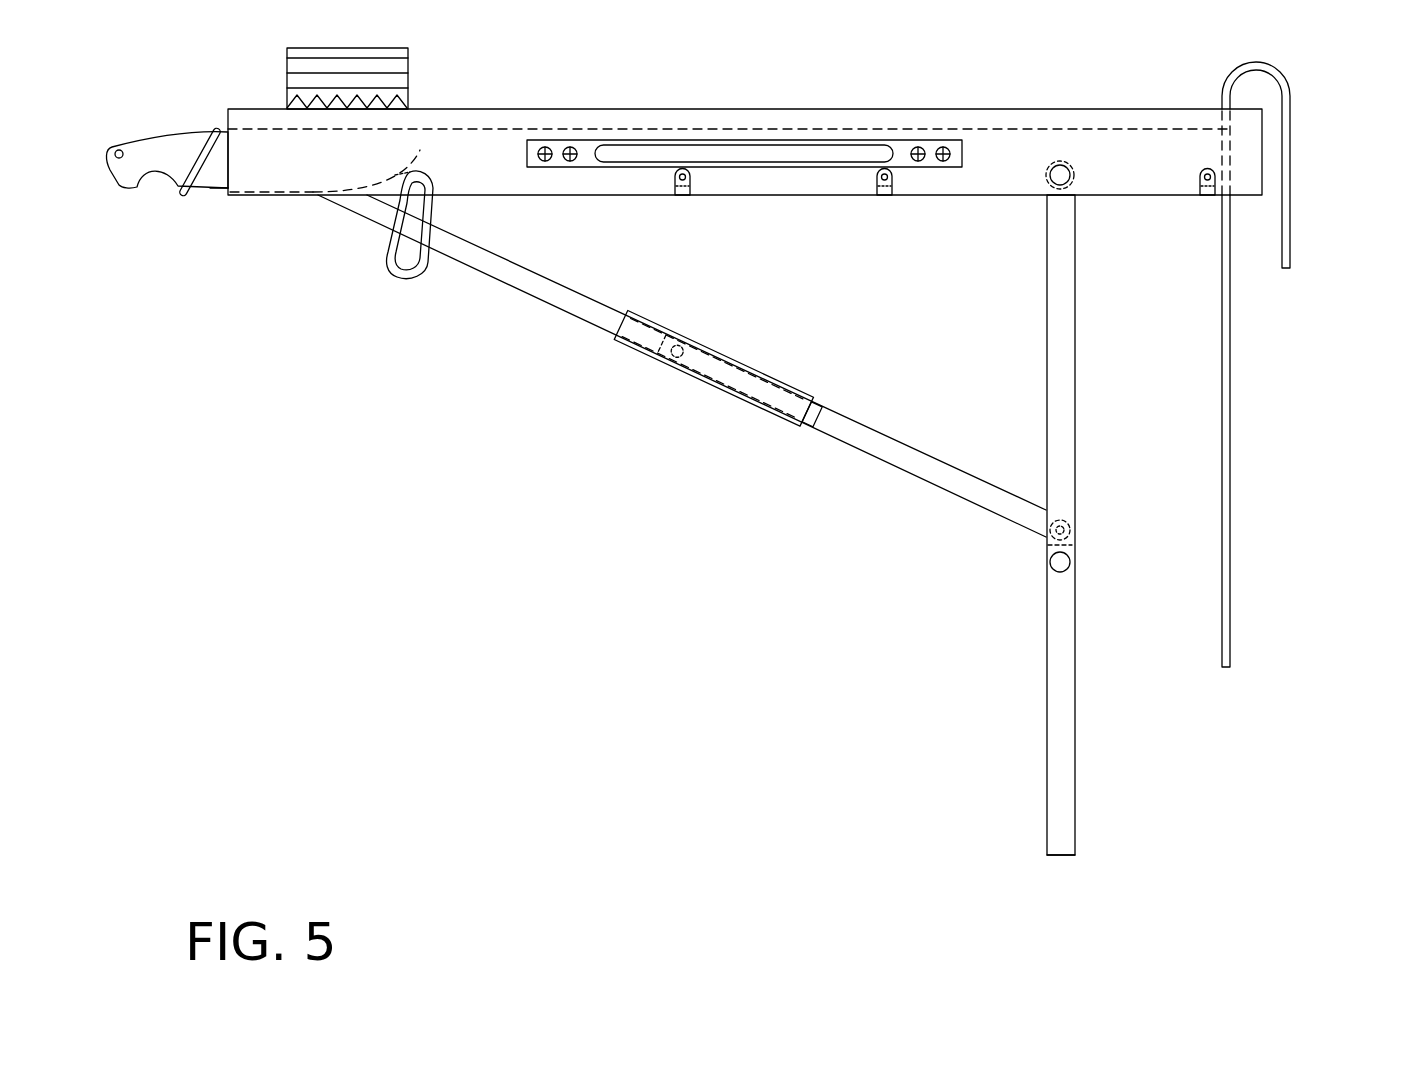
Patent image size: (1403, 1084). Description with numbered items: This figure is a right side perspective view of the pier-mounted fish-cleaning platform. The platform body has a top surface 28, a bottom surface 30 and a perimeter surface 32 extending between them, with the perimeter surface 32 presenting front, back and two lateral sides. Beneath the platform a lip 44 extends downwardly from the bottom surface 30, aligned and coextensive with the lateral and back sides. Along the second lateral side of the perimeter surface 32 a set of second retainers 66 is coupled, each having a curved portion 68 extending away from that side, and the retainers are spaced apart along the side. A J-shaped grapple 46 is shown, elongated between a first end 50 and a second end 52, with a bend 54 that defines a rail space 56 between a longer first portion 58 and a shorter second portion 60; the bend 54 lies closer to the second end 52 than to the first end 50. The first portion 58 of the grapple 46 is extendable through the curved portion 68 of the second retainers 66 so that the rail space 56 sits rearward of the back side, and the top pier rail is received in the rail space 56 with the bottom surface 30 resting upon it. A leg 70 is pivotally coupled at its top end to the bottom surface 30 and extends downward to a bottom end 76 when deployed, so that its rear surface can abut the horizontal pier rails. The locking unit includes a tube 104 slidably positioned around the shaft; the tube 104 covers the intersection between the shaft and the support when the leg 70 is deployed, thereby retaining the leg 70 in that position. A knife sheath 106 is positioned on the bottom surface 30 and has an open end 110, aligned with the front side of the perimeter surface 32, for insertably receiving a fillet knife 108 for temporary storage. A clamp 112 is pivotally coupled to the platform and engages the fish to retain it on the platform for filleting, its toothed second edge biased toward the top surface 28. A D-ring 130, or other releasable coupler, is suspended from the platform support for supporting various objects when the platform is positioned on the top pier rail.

The top surface 28 is at (965, 109).
The bottom surface 30 is at (1010, 130).
The perimeter surface 32 is at (528, 128).
The lip 44 is at (273, 195).
The grapple 46 is at (1222, 97).
The first end 50 is at (1226, 667).
The second end 52 is at (1292, 268).
The bend 54 is at (1262, 68).
The rail space 56 is at (1264, 110).
The first portion 58 is at (1258, 443).
The second portion 60 is at (1312, 134).
The second retainer 66 is at (680, 169).
The curved portion 68 is at (884, 196).
The leg 70 is at (1075, 812).
The bottom end 76 is at (1063, 855).
The tube 104 is at (752, 407).
The knife sheath 106 is at (210, 190).
The fillet knife 108 is at (165, 142).
The open end 110 is at (205, 157).
The clamp 112 is at (408, 47).
The D-ring 130 is at (420, 278).